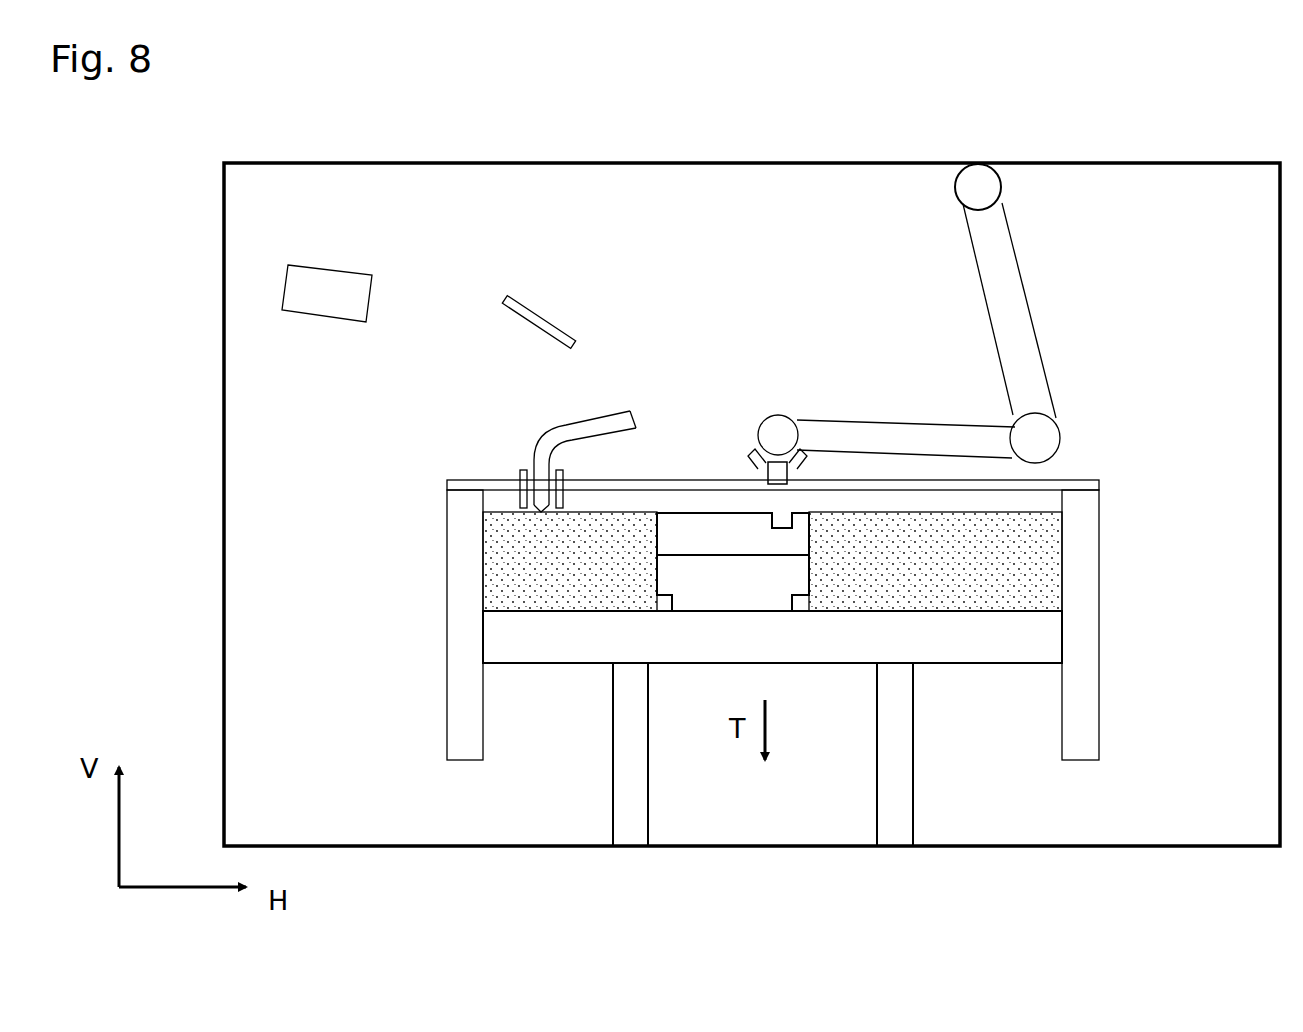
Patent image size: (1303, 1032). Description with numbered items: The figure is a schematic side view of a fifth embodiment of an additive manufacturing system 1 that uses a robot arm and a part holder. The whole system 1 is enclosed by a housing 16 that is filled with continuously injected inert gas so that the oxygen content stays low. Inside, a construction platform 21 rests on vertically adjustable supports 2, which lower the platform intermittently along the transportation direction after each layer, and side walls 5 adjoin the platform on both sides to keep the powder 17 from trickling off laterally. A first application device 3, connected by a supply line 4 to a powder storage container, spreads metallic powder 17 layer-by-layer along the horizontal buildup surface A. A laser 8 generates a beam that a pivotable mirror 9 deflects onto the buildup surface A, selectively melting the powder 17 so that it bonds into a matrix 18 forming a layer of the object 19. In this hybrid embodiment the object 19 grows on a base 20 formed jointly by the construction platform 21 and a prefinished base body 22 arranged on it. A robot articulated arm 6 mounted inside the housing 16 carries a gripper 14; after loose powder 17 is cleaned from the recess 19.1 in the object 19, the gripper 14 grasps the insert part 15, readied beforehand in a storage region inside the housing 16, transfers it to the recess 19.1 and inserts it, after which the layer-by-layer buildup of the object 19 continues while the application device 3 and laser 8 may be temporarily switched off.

The additive manufacturing system 1 is at (494, 128).
The vertically adjustable supports 2 is at (636, 742).
The first application device 3 is at (506, 471).
The supply line 4 is at (583, 425).
The side walls 5 is at (446, 612).
The robot articulated arm 6 is at (924, 344).
The laser 8 is at (333, 307).
The pivotable mirror 9 is at (535, 310).
The gripper 14 is at (748, 461).
The insert part 15 is at (775, 455).
The housing 16 is at (773, 163).
The metallic powder 17 is at (584, 586).
The matrix 18 is at (744, 547).
The object 19 is at (832, 564).
The recess 19.1 is at (797, 504).
The base 20 is at (593, 534).
The construction platform 21 is at (740, 652).
The base body 22 is at (746, 597).
The buildup surface A is at (986, 502).